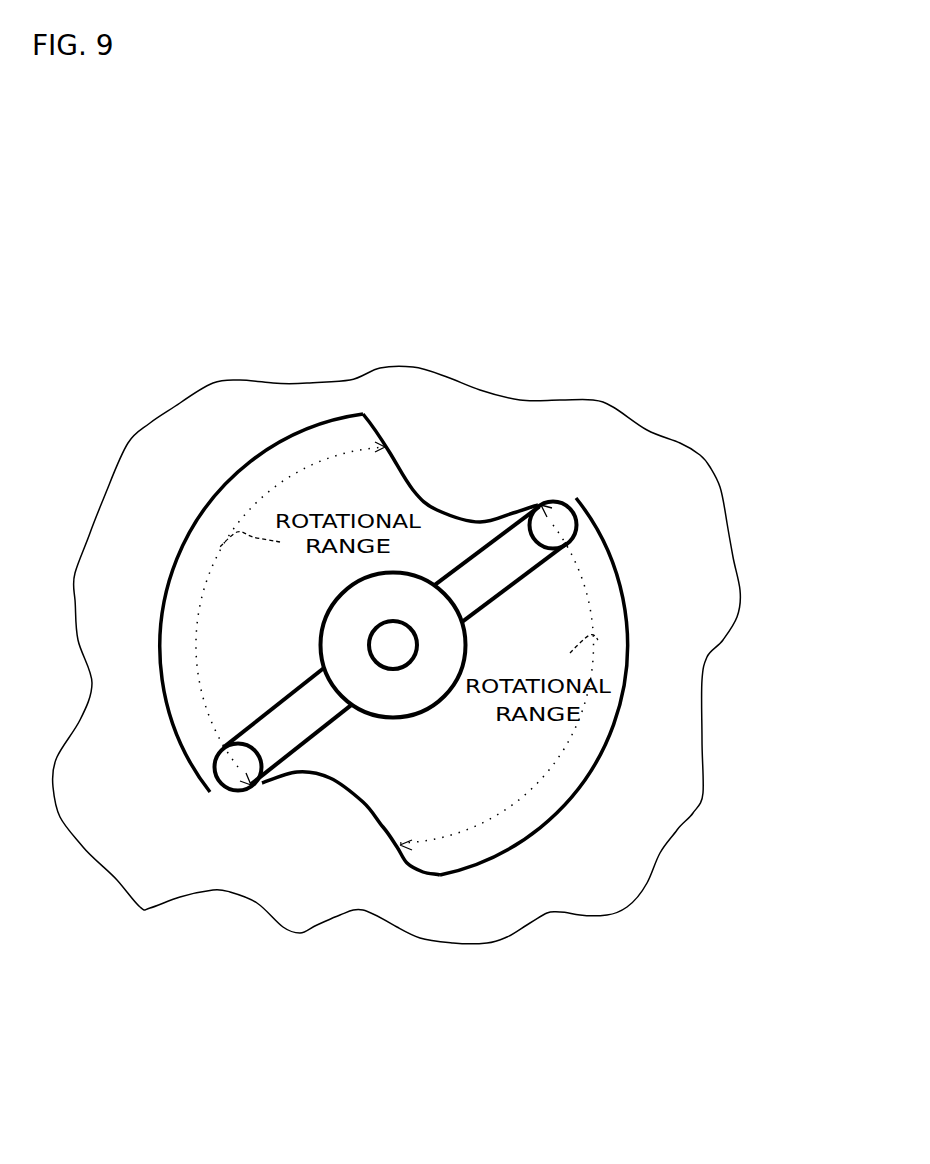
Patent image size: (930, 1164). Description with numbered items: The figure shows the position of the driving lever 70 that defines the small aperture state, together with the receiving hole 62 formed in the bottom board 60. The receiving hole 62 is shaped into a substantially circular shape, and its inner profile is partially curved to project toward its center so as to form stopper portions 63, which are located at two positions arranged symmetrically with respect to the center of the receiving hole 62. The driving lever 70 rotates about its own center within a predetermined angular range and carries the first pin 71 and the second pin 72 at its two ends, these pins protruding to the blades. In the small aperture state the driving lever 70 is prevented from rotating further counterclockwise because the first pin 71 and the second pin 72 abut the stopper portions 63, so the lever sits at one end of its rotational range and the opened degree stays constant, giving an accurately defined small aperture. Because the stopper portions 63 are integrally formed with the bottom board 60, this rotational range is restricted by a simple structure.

The bottom board 60 is at (660, 755).
The receiving hole 62 is at (612, 597).
The stopper portions 63 is at (460, 485).
The driving lever 70 is at (433, 688).
The first pin 71 is at (560, 508).
The second pin 72 is at (233, 767).